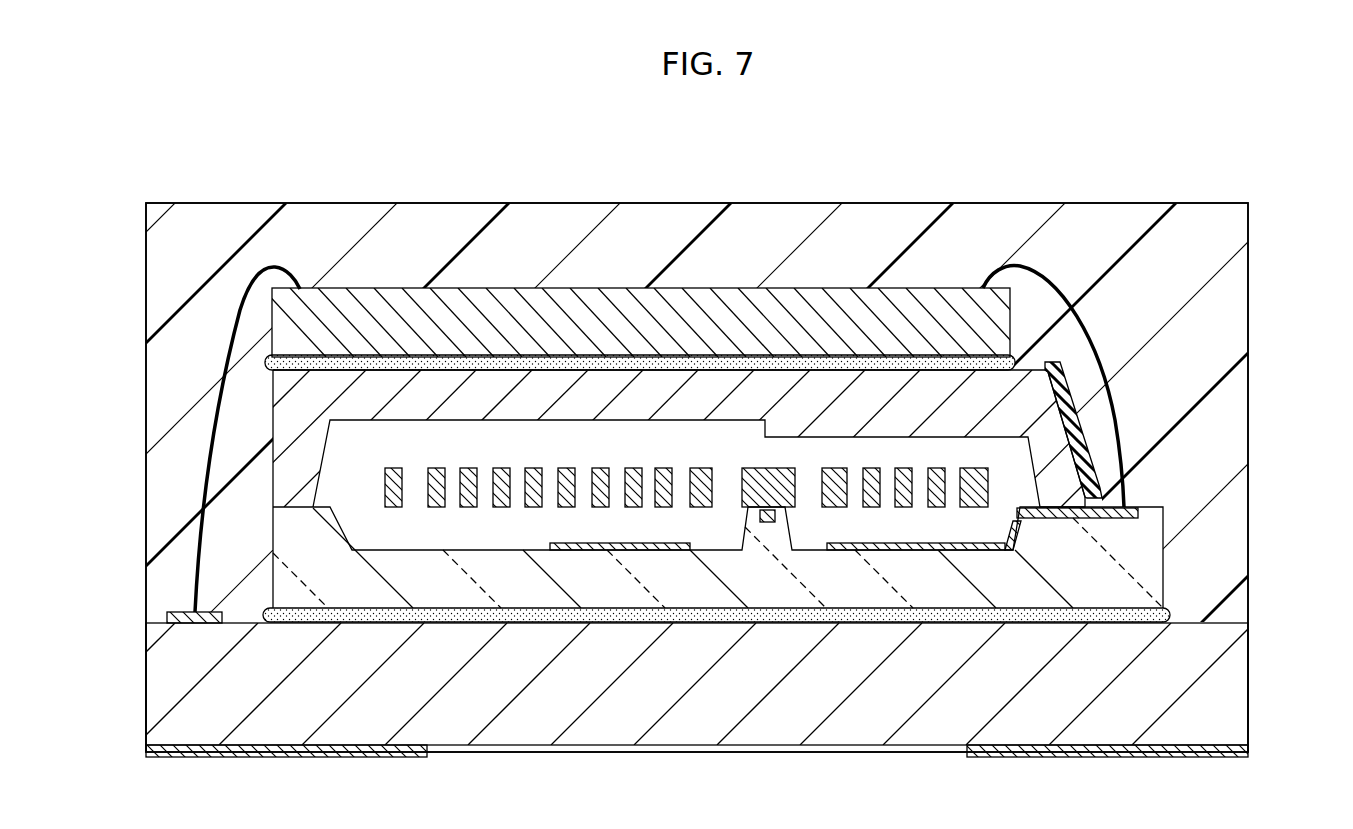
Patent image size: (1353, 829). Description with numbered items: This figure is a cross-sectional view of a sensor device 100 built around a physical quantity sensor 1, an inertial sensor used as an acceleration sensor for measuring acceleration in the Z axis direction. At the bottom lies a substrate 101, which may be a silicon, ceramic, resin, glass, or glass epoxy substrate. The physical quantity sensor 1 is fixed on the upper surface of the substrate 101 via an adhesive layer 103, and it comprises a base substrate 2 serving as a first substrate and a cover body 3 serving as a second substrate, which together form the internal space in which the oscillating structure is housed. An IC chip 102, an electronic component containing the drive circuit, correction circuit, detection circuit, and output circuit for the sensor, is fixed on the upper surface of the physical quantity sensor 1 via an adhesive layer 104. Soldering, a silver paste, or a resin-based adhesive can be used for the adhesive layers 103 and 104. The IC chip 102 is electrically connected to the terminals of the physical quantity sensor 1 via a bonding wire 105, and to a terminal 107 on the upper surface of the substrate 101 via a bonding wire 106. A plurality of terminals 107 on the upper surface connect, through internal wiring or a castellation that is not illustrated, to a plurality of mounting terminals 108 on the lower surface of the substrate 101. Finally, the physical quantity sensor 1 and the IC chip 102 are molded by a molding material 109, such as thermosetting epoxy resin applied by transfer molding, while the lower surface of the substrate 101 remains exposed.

The sensor device 100 is at (1162, 172).
The substrate 101 is at (1213, 688).
The IC chip 102 is at (735, 300).
The adhesive layer 103 is at (655, 614).
The adhesive layer 104 is at (522, 362).
The bonding wire 105 is at (1045, 280).
The bonding wire 106 is at (247, 300).
The terminal 107 is at (165, 606).
The mounting terminal 108 is at (302, 757).
The molding material 109 is at (440, 225).
The physical quantity sensor 1 is at (1168, 531).
The base substrate 2 is at (1142, 572).
The cover body 3 is at (1030, 397).